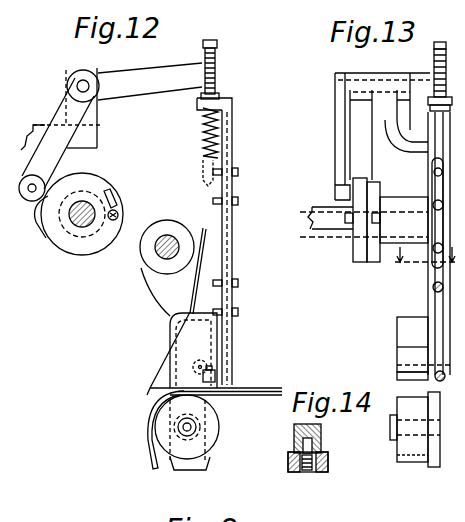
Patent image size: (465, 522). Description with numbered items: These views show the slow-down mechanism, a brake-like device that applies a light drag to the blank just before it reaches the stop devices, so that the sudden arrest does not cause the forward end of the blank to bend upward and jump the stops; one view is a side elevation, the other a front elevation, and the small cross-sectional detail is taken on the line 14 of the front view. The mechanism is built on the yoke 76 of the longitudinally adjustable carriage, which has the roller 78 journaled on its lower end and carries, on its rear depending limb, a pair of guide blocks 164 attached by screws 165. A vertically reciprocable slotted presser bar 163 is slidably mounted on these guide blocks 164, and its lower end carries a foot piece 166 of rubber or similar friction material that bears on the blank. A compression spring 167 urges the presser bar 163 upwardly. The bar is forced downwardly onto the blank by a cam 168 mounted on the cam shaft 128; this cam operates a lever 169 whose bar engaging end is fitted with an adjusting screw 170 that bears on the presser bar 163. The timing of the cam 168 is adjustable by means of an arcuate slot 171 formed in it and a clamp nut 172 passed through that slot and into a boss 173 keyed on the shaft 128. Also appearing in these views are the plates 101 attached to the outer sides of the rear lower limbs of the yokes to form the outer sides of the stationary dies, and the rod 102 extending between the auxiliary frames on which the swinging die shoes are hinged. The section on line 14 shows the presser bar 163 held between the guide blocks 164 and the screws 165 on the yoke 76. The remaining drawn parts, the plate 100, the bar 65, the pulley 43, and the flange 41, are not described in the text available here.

In FIG. 12, the lever 169 is at (99, 72).
In FIG. 12, the adjusting screw 170 is at (218, 95).
In FIG. 13, the adjusting screw 170 is at (431, 55).
In FIG. 12, the compression spring 167 is at (201, 121).
In FIG. 12, the presser bar 163 is at (232, 143).
In FIG. 14, the presser bar 163 is at (329, 463).
In FIG. 13, the presser bar 163 is at (432, 164).
In FIG. 12, the screws 165 is at (223, 203).
In FIG. 14, the screws 165 is at (309, 472).
In FIG. 13, the screws 165 is at (433, 200).
In FIG. 12, the arcuate slot 171 is at (115, 197).
In FIG. 12, the clamp nut 172 is at (118, 214).
In FIG. 13, the clamp nut 172 is at (346, 227).
In FIG. 12, the cam 168 is at (30, 203).
In FIG. 13, the cam 168 is at (356, 263).
In FIG. 12, the cam shaft 128 is at (64, 225).
In FIG. 13, the cam shaft 128 is at (316, 207).
In FIG. 12, the yoke 76 is at (127, 232).
In FIG. 14, the yoke 76 is at (322, 432).
In FIG. 12, the rod 102 is at (155, 272).
In FIG. 12, the plates 101 is at (166, 360).
In FIG. 13, the plates 101 is at (400, 366).
In FIG. 12, the foot piece 166 is at (225, 381).
In FIG. 12, the plate 100 is at (276, 390).
In FIG. 12, the bar 65 is at (276, 396).
In FIG. 12, the pulley 43 is at (216, 428).
In FIG. 13, the pulley 43 is at (415, 458).
In FIG. 13, the boss 173 is at (368, 182).
In FIG. 14, the guide blocks 164 is at (289, 463).
In FIG. 13, the guide blocks 164 is at (434, 178).
In FIG. 13, the section line 14 is at (422, 263).
In FIG. 13, the roller 78 is at (404, 372).
In FIG. 13, the flange 41 is at (435, 466).